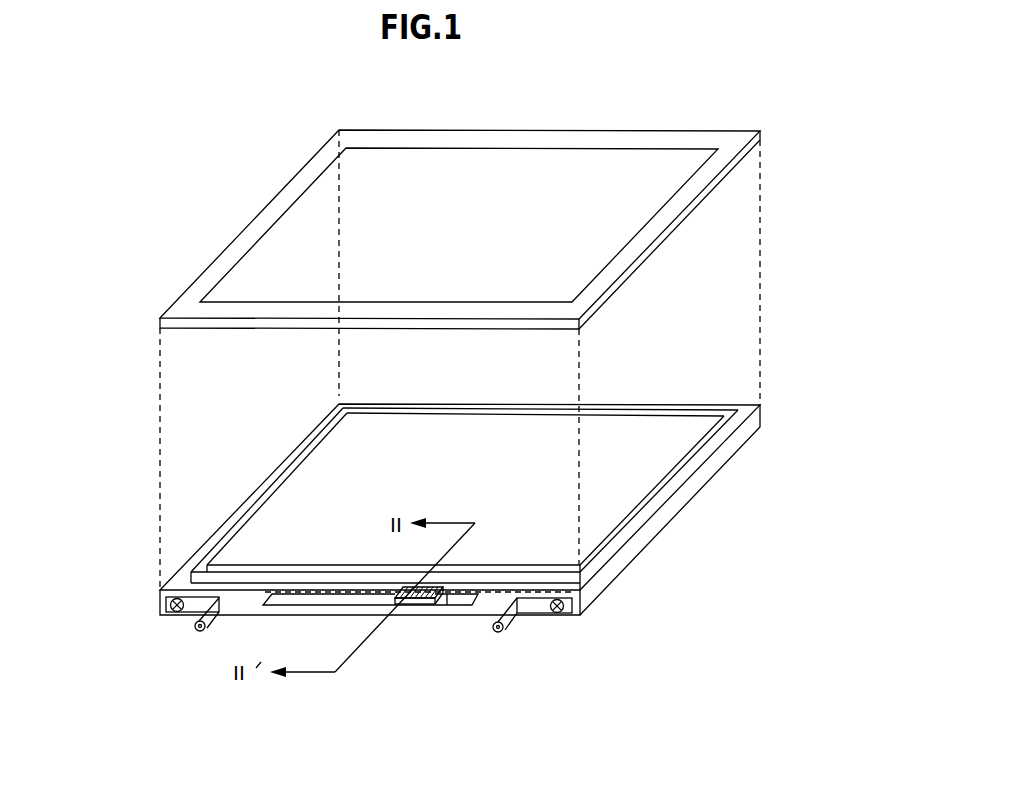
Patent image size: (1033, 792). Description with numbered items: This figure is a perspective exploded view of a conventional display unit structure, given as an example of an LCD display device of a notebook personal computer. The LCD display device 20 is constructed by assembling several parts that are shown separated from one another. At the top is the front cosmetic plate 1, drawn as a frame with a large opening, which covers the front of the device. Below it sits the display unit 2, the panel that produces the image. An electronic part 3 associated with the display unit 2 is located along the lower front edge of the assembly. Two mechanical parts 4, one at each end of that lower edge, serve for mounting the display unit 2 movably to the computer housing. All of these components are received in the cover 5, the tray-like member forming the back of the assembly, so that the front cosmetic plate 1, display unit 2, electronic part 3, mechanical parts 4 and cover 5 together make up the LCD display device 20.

The front cosmetic plate 1 is at (497, 134).
The display unit 2 is at (323, 455).
The electronic part 3 is at (433, 598).
The mechanical parts 4 is at (203, 632).
The cover 5 is at (681, 501).
The LCD display device 20 is at (256, 165).